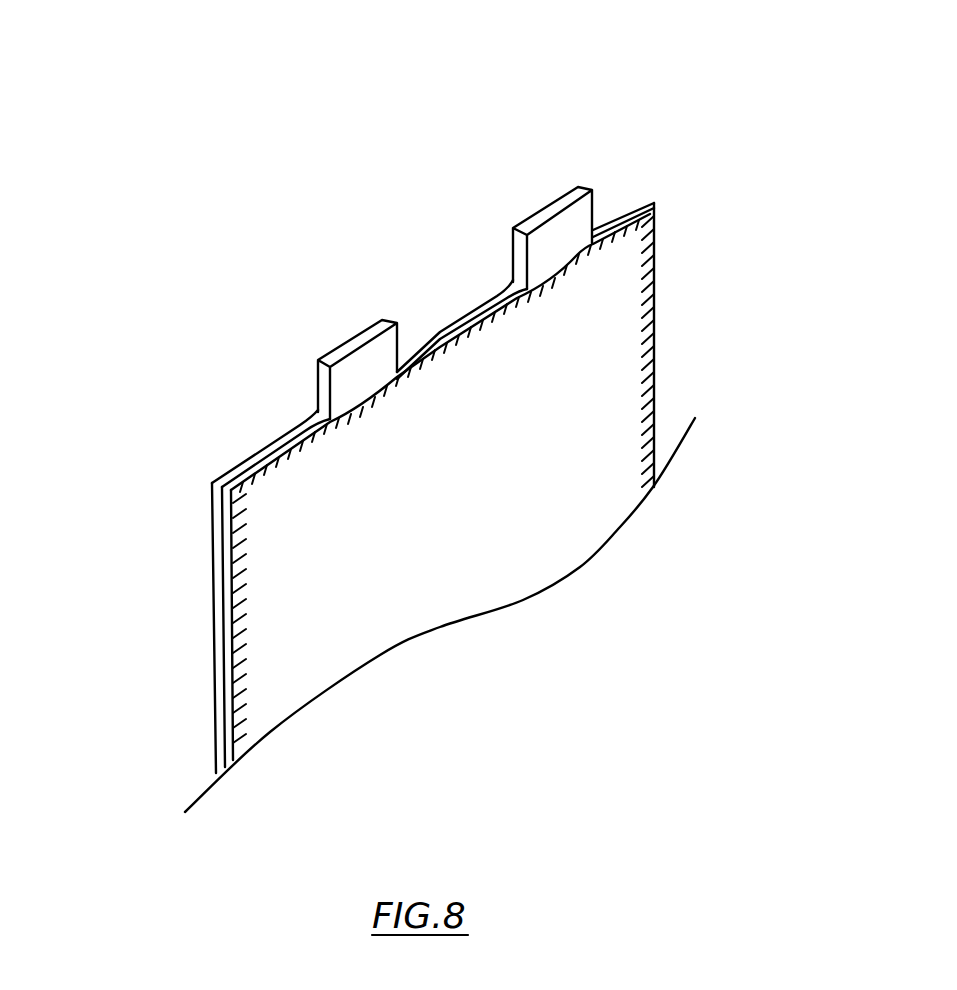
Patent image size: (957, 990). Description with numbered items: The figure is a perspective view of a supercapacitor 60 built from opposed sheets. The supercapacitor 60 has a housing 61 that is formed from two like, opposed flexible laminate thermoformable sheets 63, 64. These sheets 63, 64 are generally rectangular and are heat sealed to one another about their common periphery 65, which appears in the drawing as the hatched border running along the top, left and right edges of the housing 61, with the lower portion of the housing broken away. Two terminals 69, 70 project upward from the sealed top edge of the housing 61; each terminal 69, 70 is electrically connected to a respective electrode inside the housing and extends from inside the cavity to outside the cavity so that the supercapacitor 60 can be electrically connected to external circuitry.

The supercapacitor 60 is at (645, 128).
The housing 61 is at (665, 393).
The flexible laminate thermoformable sheet 63 is at (243, 463).
The flexible laminate thermoformable sheet 64 is at (337, 590).
The common periphery 65 is at (458, 330).
The terminal 69 is at (360, 372).
The terminal 70 is at (558, 230).